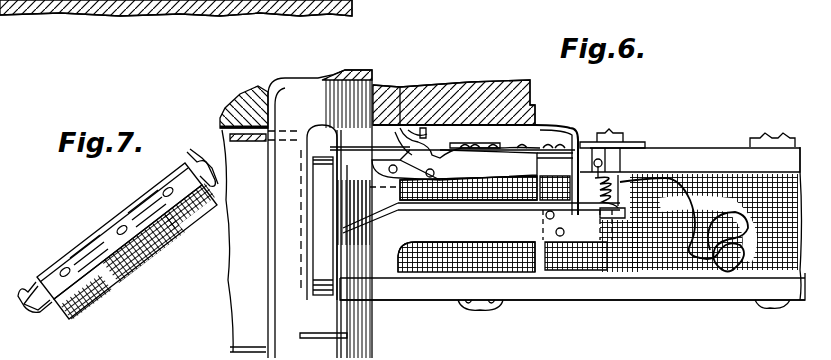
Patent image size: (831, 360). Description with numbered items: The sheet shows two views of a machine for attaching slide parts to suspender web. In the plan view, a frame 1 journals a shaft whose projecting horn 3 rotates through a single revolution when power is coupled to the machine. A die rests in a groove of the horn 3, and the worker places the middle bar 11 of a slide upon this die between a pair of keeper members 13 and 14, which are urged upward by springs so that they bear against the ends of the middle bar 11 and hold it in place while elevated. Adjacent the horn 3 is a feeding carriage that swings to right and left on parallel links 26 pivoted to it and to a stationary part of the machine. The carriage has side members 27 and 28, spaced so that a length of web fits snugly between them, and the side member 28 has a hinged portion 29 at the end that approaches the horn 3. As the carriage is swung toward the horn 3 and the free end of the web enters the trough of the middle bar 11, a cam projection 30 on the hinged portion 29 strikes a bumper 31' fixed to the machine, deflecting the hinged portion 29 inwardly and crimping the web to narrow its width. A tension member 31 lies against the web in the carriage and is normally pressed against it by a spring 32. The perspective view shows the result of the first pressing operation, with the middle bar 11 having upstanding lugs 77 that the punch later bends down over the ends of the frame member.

In FIG. 6, the frame 1 is at (235, 106).
In FIG. 6, the horn 3 is at (296, 78).
In FIG. 6, the keeper member 13 is at (310, 315).
In FIG. 6, the keeper member 14 is at (312, 156).
In FIG. 6, the parallel links 26 is at (505, 305).
In FIG. 6, the side member 27 is at (655, 276).
In FIG. 6, the side member 28 is at (705, 170).
In FIG. 6, the hinged portion 29 is at (507, 150).
In FIG. 6, the cam projection 30 is at (420, 150).
In FIG. 6, the tension member 31 is at (572, 253).
In FIG. 6, the bumper 31' is at (467, 113).
In FIG. 6, the spring 32 is at (630, 180).
In FIG. 7, the middle bar 11 is at (88, 234).
In FIG. 7, the upstanding lugs 77 is at (205, 165).